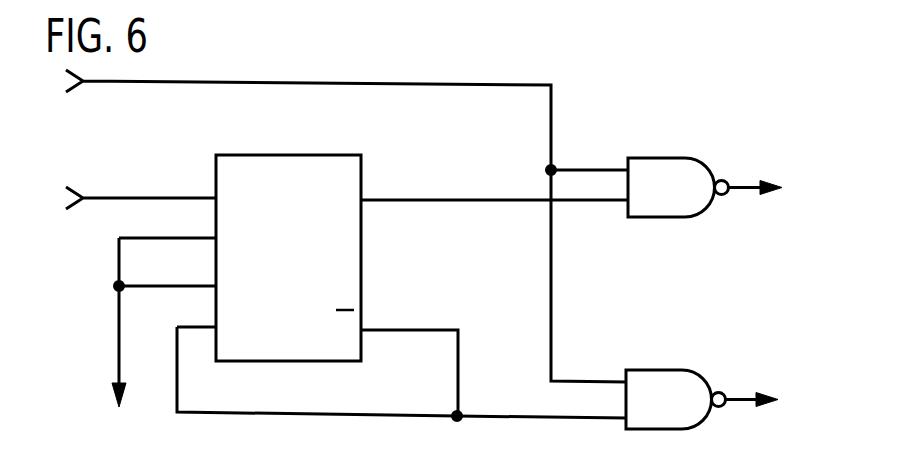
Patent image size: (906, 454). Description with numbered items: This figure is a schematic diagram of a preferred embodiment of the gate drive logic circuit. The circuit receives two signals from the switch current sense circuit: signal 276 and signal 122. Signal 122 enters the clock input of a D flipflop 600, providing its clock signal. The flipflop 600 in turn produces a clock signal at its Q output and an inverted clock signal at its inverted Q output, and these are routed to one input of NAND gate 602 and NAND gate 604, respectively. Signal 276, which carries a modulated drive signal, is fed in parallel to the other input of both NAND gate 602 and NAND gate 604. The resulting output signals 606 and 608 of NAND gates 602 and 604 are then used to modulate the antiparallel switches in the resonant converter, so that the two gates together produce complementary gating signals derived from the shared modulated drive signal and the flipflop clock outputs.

The signal 276 is at (66, 92).
The signal 122 is at (66, 209).
The D flipflop 600 is at (279, 155).
The NAND gate 602 is at (653, 158).
The NAND gate 604 is at (678, 370).
The output signal 606 is at (777, 188).
The output signal 608 is at (774, 402).